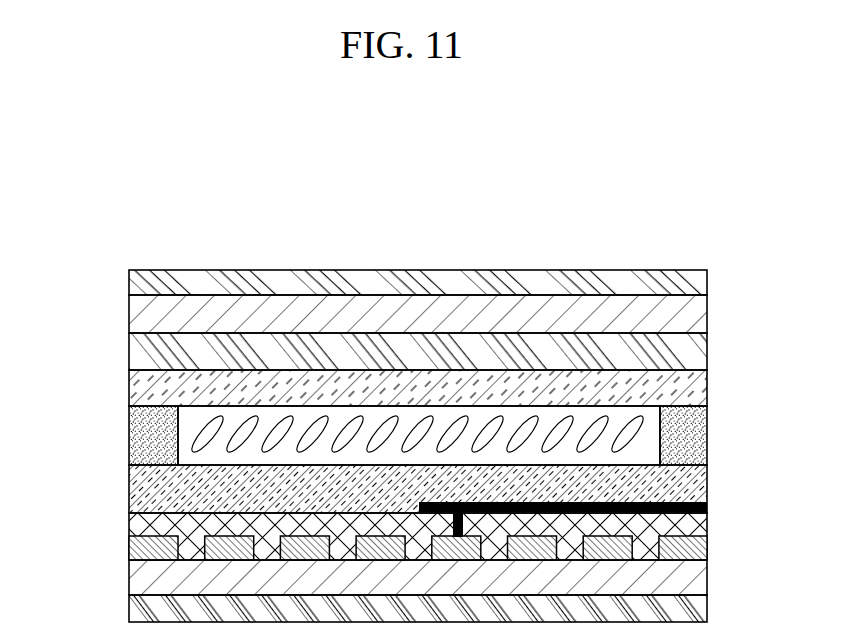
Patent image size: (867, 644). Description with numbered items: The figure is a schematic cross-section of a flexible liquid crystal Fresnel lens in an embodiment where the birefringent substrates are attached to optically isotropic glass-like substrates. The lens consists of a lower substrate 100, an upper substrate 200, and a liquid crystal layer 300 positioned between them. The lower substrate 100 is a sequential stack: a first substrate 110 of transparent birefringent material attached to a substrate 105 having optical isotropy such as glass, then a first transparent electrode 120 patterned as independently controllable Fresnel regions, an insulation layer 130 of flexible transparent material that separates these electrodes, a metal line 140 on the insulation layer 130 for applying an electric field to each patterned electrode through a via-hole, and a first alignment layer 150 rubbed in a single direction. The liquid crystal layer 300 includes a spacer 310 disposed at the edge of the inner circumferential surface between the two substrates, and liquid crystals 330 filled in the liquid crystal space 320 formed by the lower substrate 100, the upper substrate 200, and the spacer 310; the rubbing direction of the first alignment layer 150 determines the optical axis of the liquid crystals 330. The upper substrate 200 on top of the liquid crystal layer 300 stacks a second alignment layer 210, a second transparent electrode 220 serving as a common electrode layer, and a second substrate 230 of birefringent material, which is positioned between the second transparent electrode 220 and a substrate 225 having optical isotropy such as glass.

The lower substrate 100 is at (125, 467).
The substrate having optical isotropy 105 is at (700, 608).
The first substrate 110 is at (700, 580).
The first transparent electrode 120 is at (700, 549).
The insulation layer 130 is at (700, 526).
The metal line 140 is at (706, 506).
The first alignment layer 150 is at (700, 484).
The upper substrate 200 is at (125, 272).
The second alignment layer 210 is at (700, 388).
The second transparent electrode 220 is at (706, 350).
The substrate having optical isotropy 225 is at (706, 282).
The second substrate 230 is at (706, 312).
The liquid crystal layer 300 is at (113, 438).
The spacer 310 is at (690, 460).
The liquid crystal space 320 is at (642, 452).
The liquid crystals 330 is at (642, 420).